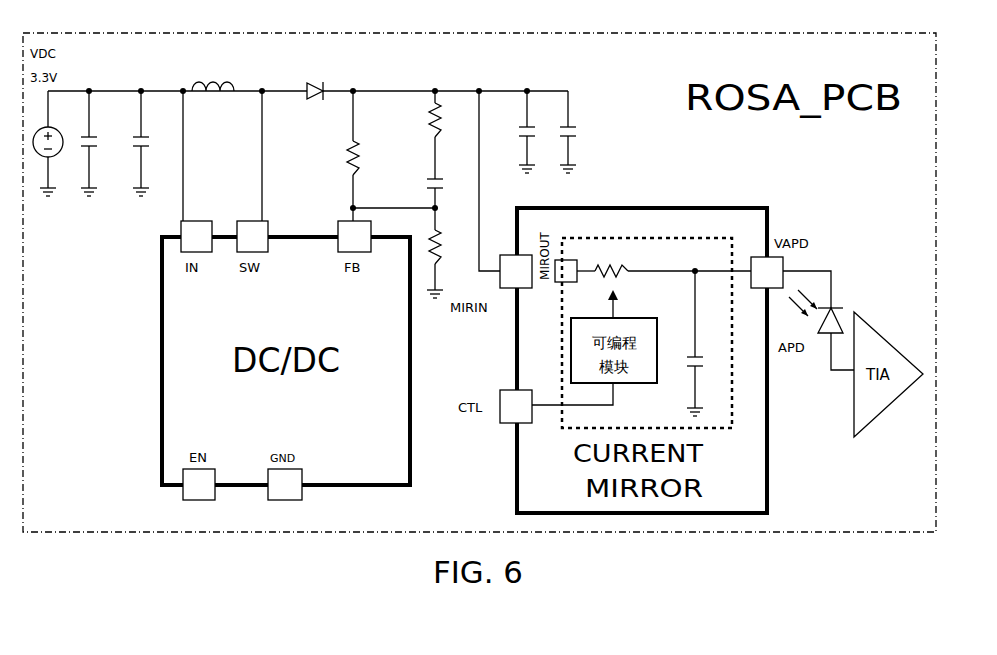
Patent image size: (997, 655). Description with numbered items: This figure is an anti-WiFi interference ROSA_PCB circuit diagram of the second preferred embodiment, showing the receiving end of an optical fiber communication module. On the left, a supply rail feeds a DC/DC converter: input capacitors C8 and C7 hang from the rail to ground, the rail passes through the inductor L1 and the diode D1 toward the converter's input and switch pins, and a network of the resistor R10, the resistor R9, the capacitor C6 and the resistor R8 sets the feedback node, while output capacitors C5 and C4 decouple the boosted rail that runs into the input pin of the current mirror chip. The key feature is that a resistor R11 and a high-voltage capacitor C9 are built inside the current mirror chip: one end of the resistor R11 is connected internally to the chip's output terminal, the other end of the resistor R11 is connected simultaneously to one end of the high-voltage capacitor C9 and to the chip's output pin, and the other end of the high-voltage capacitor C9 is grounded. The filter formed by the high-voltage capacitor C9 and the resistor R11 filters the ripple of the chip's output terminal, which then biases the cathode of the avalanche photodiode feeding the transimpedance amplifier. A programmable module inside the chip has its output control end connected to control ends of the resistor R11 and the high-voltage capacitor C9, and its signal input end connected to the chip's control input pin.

The input capacitor C8 is at (98, 142).
The input capacitor C7 is at (150, 142).
The inductor L1 is at (222, 77).
The diode D1 is at (315, 80).
The feedback resistor R10 is at (391, 154).
The resistor R9 is at (446, 133).
The capacitor C6 is at (445, 203).
The resistor R8 is at (445, 264).
The output capacitor C5 is at (505, 130).
The output capacitor C4 is at (578, 132).
The resistor R11 is at (664, 263).
The high-voltage capacitor C9 is at (703, 343).